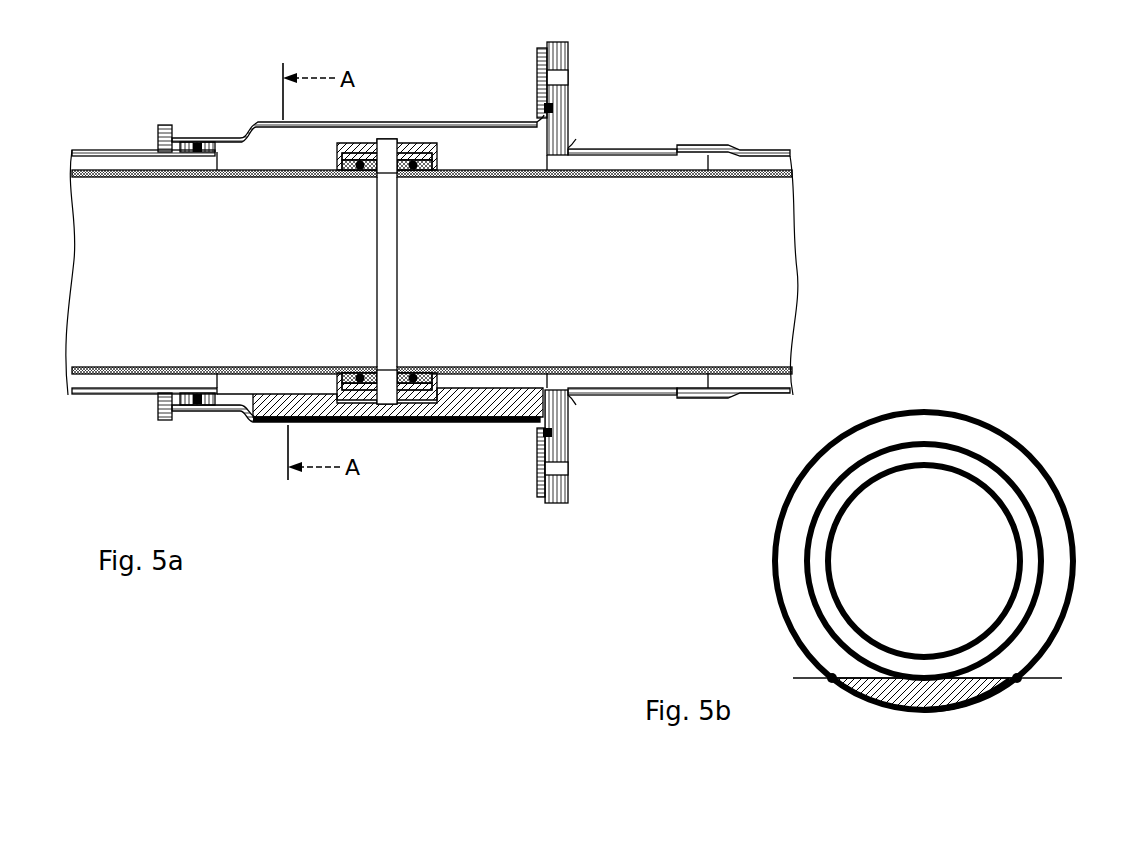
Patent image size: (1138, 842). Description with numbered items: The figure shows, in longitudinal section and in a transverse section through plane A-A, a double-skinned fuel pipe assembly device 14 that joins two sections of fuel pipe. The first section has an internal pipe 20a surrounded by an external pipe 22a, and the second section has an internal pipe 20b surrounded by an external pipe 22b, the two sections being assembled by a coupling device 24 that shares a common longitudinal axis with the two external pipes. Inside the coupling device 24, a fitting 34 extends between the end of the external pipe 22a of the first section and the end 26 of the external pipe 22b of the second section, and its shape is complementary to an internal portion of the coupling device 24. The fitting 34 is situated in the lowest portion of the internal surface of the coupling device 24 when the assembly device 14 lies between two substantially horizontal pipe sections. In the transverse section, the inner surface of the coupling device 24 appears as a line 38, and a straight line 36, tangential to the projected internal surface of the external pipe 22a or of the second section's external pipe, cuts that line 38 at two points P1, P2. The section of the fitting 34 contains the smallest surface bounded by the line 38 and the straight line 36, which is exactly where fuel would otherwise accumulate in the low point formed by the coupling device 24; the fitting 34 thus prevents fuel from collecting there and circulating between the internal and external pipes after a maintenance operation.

In FIG. 5A, the double-skinned fuel pipe assembly device 14 is at (426, 487).
In FIG. 5A, the internal pipe of the first section 20a is at (117, 171).
In FIG. 5B, the internal pipe of the first section 20a is at (971, 480).
In FIG. 5A, the internal pipe of the second section 20b is at (777, 176).
In FIG. 5A, the external pipe of the first section 22a is at (90, 150).
In FIG. 5B, the external pipe of the first section 22a is at (966, 448).
In FIG. 5A, the external pipe of the second section 22b is at (724, 148).
In FIG. 5A, the coupling device 24 is at (454, 122).
In FIG. 5B, the coupling device 24 is at (926, 411).
In FIG. 5A, the end of the external pipe of the second section 26 is at (570, 102).
In FIG. 5A, the fitting 34 is at (496, 408).
In FIG. 5B, the fitting 34 is at (900, 709).
In FIG. 5B, the straight line 36 is at (1048, 678).
In FIG. 5B, the line 38 is at (995, 692).
In FIG. 5B, the first intersection point P1 is at (830, 684).
In FIG. 5B, the second intersection point P2 is at (1020, 684).